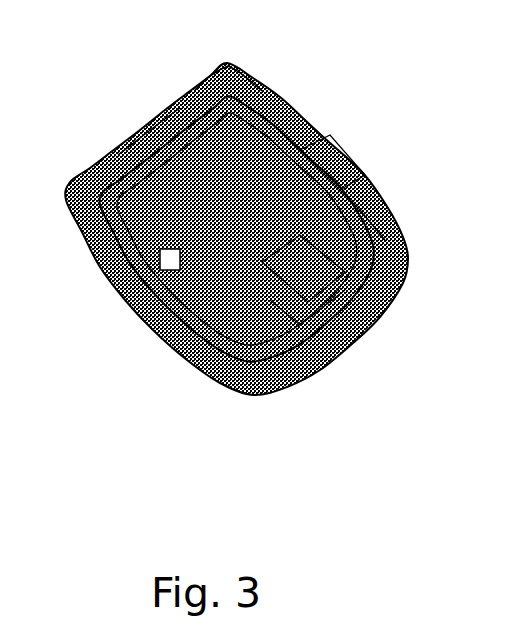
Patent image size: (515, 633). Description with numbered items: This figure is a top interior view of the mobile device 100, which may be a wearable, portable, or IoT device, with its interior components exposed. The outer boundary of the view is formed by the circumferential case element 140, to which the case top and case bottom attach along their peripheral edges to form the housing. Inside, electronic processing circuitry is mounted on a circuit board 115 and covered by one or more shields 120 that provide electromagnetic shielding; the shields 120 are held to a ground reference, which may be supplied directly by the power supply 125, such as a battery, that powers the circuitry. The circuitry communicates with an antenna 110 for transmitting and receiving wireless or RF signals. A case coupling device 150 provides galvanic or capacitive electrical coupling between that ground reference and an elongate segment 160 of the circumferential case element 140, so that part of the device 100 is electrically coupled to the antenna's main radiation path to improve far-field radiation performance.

The mobile device 100 is at (253, 211).
The antenna 110 is at (297, 292).
The circuit board 115 is at (353, 236).
The shield 120 is at (238, 210).
The power supply 125 is at (160, 270).
The circumferential case element 140 is at (295, 117).
The case coupling device 150 is at (177, 122).
The elongate segment 160 is at (228, 62).